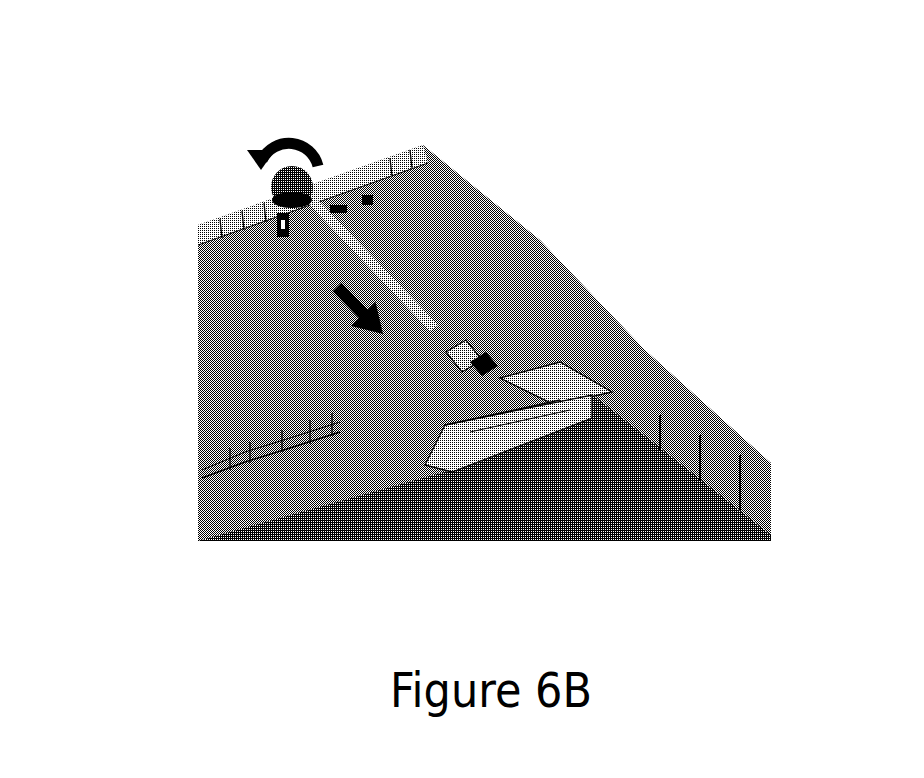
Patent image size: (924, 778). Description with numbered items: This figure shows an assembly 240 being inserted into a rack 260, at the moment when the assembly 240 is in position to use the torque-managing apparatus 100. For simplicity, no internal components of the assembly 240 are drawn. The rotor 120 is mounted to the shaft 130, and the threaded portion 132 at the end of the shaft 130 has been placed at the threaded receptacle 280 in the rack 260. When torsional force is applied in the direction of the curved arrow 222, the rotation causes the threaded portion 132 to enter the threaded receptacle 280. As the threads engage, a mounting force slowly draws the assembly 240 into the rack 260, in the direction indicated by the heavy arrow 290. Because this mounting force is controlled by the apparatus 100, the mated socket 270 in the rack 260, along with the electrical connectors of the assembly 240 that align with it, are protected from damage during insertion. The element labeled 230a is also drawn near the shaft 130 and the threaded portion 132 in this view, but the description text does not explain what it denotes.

The apparatus 100 is at (664, 142).
The rotor 120 is at (265, 180).
The shaft 130 is at (336, 252).
The threaded portion 132 is at (488, 355).
The arrow 222 is at (290, 118).
The sensor 230a is at (460, 337).
The assembly 240 is at (502, 219).
The rack 260 is at (237, 424).
The mated socket 270 is at (514, 431).
The threaded receptacle 280 is at (509, 385).
The arrow 290 is at (336, 314).